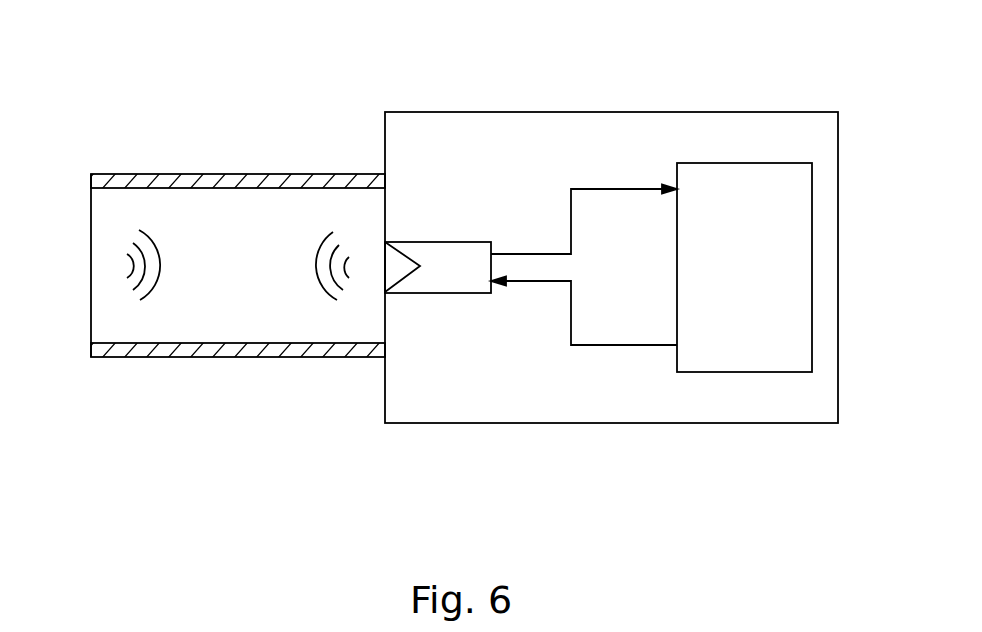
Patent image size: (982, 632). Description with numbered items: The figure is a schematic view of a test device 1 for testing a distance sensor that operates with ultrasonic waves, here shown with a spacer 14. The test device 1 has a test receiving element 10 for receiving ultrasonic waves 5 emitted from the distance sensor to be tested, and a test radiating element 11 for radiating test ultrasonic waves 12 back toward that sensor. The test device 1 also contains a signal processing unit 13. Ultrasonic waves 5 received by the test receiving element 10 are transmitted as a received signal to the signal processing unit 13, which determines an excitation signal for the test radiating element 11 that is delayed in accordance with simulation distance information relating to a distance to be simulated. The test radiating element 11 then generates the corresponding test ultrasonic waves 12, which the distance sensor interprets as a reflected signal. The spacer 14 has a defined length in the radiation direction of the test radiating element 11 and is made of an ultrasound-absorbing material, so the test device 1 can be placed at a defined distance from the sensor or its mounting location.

The test device 1 is at (528, 102).
The ultrasonic waves 5 is at (133, 263).
The test receiving element 10 is at (438, 267).
The test radiating element 11 is at (438, 267).
The test ultrasonic waves 12 is at (325, 295).
The signal processing unit 13 is at (744, 267).
The spacer 14 is at (155, 173).